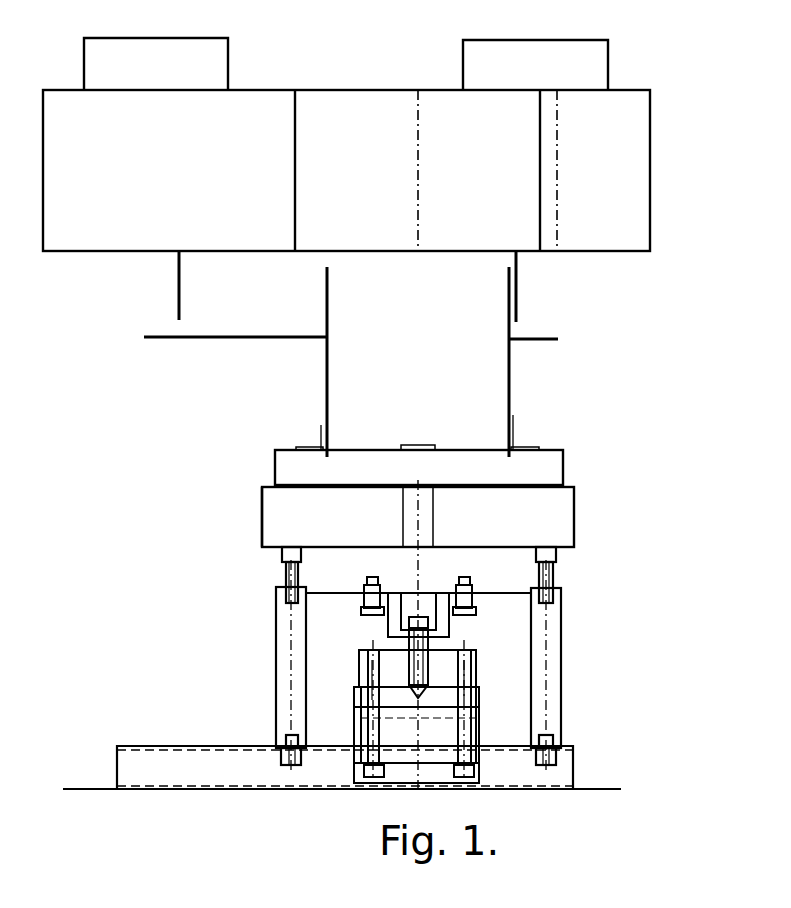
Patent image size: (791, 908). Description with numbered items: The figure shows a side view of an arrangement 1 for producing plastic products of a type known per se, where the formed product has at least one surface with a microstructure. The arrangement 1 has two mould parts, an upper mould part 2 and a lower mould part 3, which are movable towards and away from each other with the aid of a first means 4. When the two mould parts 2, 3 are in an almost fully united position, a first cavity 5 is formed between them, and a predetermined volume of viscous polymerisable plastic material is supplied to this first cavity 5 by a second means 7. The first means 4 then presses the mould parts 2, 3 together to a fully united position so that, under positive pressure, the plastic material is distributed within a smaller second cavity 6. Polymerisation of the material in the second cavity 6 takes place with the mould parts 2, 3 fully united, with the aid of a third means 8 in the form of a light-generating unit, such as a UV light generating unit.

The arrangement for producing plastic products 1 is at (636, 331).
The upper mould part 2 is at (580, 470).
The lower mould part 3 is at (580, 486).
The first means 4 is at (567, 635).
The first cavity 5 is at (267, 482).
The second cavity 6 is at (248, 509).
The second means 7 is at (480, 665).
The third means 8 is at (346, 144).